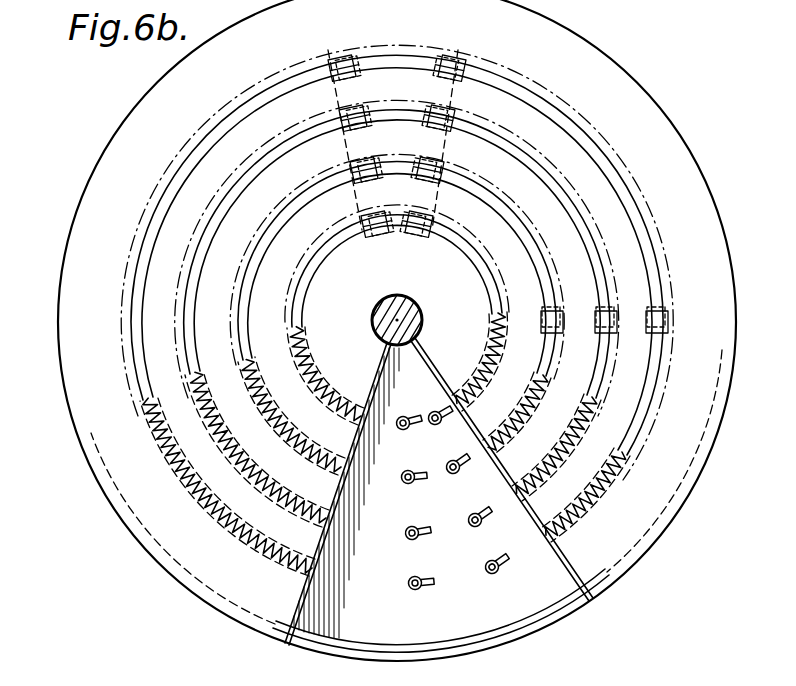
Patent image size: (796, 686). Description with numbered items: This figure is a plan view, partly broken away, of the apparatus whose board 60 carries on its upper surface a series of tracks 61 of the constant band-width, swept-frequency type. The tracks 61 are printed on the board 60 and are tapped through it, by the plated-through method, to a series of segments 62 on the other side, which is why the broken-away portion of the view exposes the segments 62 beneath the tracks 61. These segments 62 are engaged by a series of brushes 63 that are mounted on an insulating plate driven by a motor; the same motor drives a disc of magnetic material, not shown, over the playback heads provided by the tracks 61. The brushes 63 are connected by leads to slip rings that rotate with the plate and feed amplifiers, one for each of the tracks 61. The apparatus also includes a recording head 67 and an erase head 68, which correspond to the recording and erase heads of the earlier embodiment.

The board 60 is at (668, 528).
The tracks 61 is at (243, 360).
The segments 62 is at (316, 560).
The brushes 63 is at (500, 557).
The recording head 67 is at (338, 90).
The erase head 68 is at (447, 92).